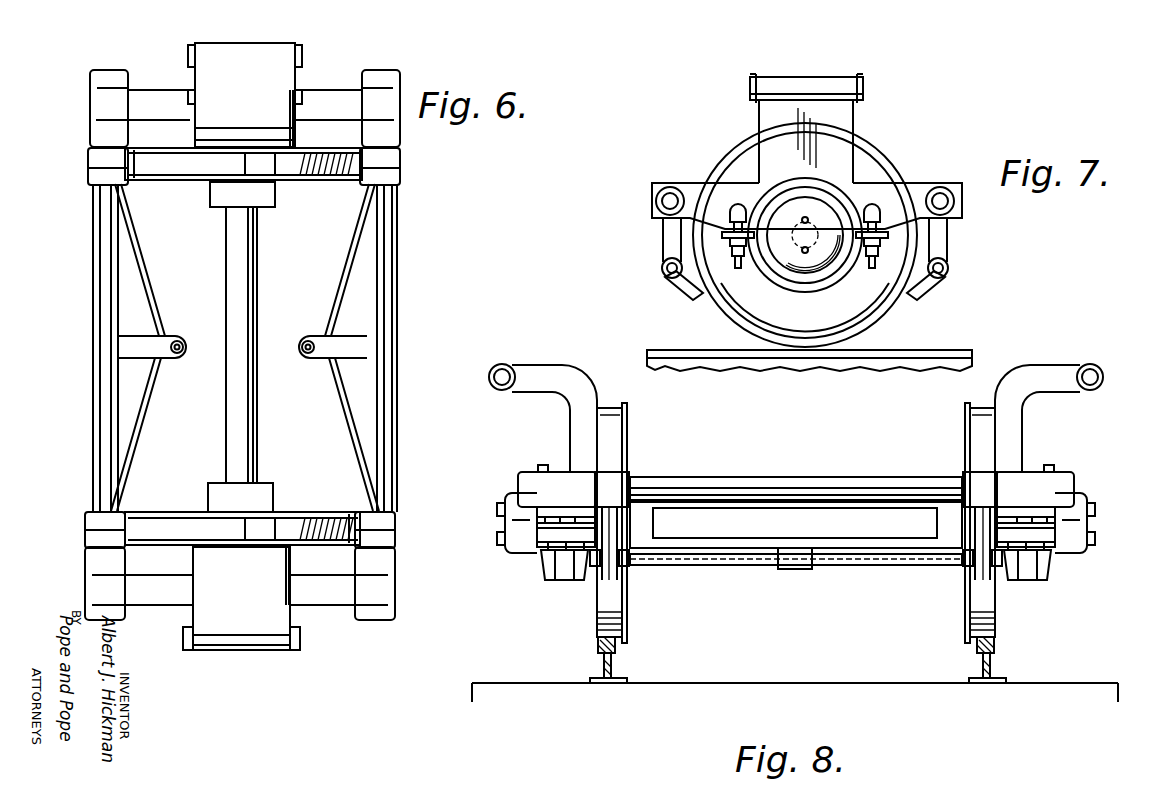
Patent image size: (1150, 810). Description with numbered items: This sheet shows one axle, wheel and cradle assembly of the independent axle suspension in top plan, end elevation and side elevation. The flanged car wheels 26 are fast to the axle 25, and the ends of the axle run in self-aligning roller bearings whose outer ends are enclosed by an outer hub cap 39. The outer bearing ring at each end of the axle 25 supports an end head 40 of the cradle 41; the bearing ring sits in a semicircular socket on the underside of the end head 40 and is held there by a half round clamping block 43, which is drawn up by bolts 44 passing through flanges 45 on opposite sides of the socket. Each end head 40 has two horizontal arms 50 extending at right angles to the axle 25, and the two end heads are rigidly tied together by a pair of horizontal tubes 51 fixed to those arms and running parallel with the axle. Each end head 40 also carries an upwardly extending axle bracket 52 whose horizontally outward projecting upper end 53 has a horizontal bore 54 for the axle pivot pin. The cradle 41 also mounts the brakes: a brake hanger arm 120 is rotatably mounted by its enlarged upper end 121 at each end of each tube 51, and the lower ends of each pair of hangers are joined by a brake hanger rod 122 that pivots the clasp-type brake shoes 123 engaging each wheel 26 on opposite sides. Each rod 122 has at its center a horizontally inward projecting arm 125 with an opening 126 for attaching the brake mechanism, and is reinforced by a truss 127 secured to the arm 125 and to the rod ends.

In FIG. 6, the axle 25 is at (256, 250).
In FIG. 6, the flanged car wheel 26 is at (311, 176).
In FIG. 7, the flanged car wheel 26 is at (880, 318).
In FIG. 8, the flanged car wheel 26 is at (616, 624).
In FIG. 7, the outer hub cap 39 is at (797, 212).
In FIG. 8, the outer hub cap 39 is at (508, 548).
In FIG. 6, the end head 40 is at (230, 346).
In FIG. 8, the end head 40 is at (796, 519).
In FIG. 6, the cradle 41 is at (236, 304).
In FIG. 7, the cradle 41 is at (800, 178).
In FIG. 8, the cradle 41 is at (796, 519).
In FIG. 7, the half round clamping block 43 is at (800, 295).
In FIG. 8, the half round clamping block 43 is at (560, 578).
In FIG. 7, the bolt 44 is at (733, 262).
In FIG. 7, the flange 45 is at (730, 228).
In FIG. 6, the horizontal arm 50 is at (388, 131).
In FIG. 8, the horizontal arm 50 is at (796, 486).
In FIG. 6, the horizontal tube 51 is at (97, 309).
In FIG. 7, the horizontal tube 51 is at (655, 203).
In FIG. 8, the horizontal tube 51 is at (772, 478).
In FIG. 6, the axle bracket 52 is at (242, 346).
In FIG. 7, the axle bracket 52 is at (830, 105).
In FIG. 8, the axle bracket 52 is at (789, 405).
In FIG. 7, the upper end of axle bracket 53 is at (823, 64).
In FIG. 8, the horizontal bore 54 is at (497, 388).
In FIG. 7, the brake hanger arm 120 is at (663, 240).
In FIG. 8, the brake hanger arm 120 is at (612, 523).
In FIG. 6, the enlarged upper end of brake hanger 121 is at (88, 170).
In FIG. 8, the enlarged upper end of brake hanger 121 is at (620, 477).
In FIG. 7, the brake hanger rod 122 is at (662, 270).
In FIG. 8, the brake hanger rod 122 is at (750, 566).
In FIG. 6, the brake shoe 123 is at (146, 141).
In FIG. 7, the brake shoe 123 is at (679, 285).
In FIG. 8, the brake shoe 123 is at (620, 578).
In FIG. 6, the arm 125 is at (178, 341).
In FIG. 8, the arm 125 is at (800, 569).
In FIG. 6, the opening 126 is at (175, 360).
In FIG. 6, the truss 127 is at (140, 237).